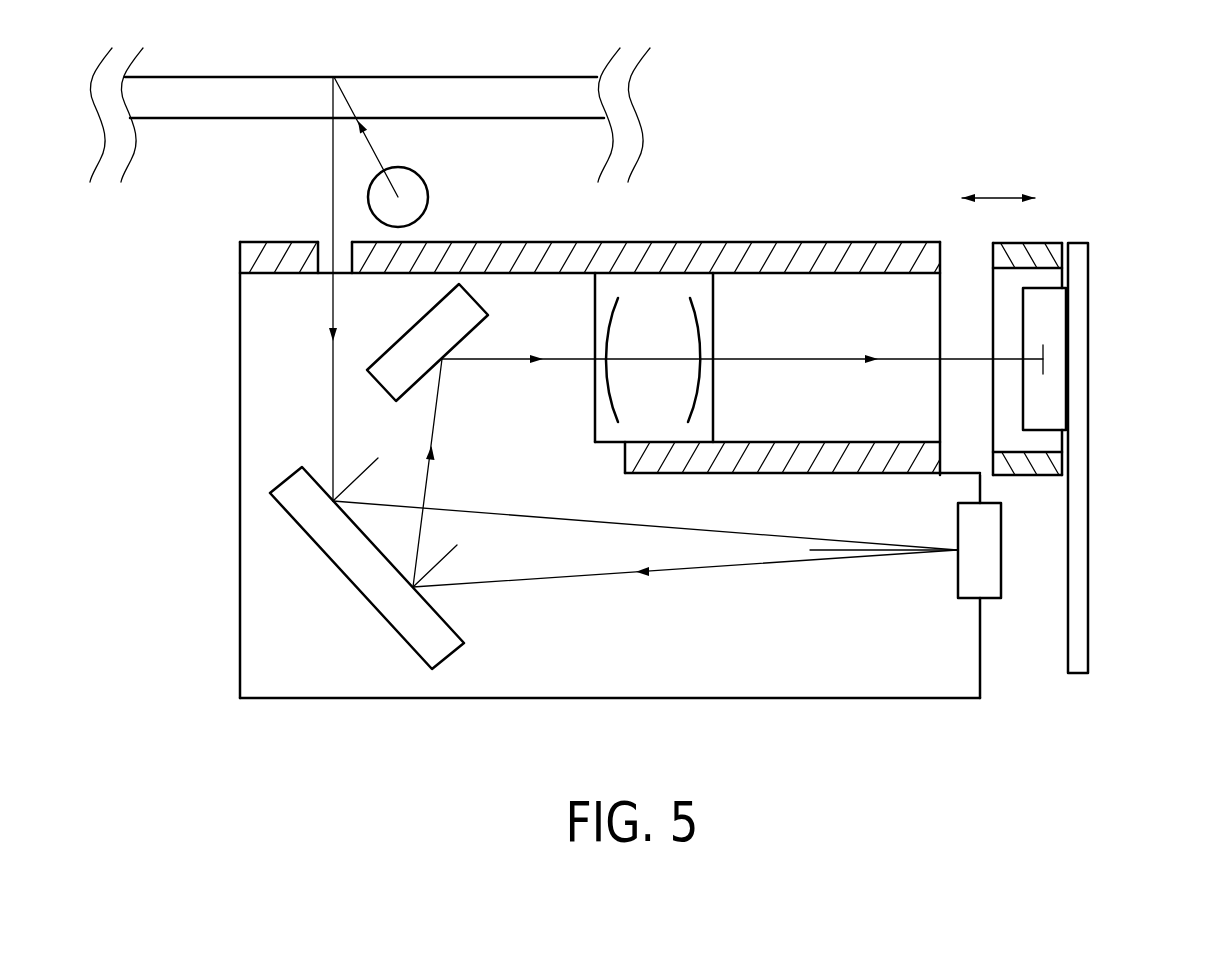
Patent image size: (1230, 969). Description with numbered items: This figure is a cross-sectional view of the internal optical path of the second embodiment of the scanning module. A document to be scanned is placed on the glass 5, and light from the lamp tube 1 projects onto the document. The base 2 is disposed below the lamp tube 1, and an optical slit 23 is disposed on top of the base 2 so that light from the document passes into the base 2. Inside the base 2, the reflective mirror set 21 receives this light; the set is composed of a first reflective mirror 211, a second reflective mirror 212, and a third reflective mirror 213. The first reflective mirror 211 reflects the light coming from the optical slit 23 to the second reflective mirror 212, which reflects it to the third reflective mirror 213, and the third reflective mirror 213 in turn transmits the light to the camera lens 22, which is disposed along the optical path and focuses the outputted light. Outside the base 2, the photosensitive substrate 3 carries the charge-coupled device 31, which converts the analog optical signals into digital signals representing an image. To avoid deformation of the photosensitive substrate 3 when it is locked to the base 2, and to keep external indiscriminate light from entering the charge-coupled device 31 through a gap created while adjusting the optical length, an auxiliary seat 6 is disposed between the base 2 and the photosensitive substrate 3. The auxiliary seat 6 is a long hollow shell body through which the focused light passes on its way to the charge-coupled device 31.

The glass 5 is at (242, 88).
The lamp tube 1 is at (423, 197).
The optical slit 23 is at (327, 242).
The camera lens 22 is at (652, 300).
The third reflective mirror 213 is at (395, 356).
The first reflective mirror 211 is at (422, 647).
The second reflective mirror 212 is at (988, 575).
The reflective mirror set 21 is at (280, 570).
The base 2 is at (882, 680).
The auxiliary seat 6 is at (1050, 257).
The charge-coupled device 31 is at (1048, 313).
The photosensitive substrate 3 is at (1082, 365).